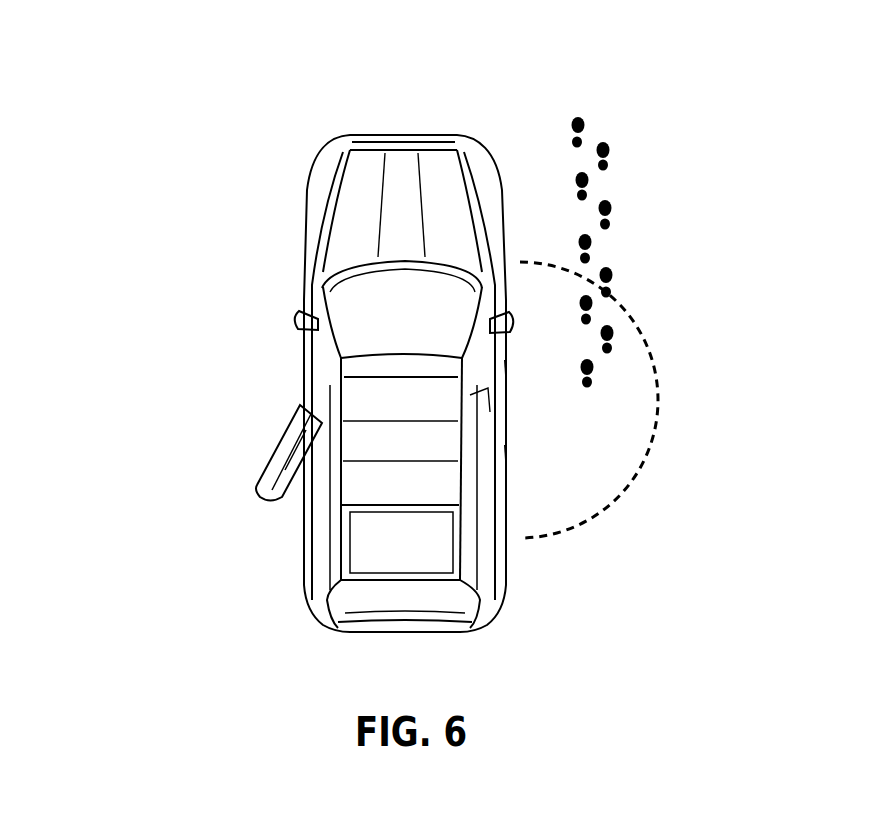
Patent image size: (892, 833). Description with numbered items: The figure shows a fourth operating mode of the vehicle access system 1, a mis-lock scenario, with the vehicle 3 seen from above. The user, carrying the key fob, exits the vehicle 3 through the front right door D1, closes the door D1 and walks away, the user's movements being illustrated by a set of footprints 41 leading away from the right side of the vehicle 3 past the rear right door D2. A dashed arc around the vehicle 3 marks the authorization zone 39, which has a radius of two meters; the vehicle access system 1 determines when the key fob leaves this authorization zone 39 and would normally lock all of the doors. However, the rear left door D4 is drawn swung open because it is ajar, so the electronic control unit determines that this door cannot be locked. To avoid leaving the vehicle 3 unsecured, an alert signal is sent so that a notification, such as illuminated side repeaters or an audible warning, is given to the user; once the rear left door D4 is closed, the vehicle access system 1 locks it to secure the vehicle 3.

The vehicle access system 1 is at (240, 69).
The vehicle 3 is at (323, 217).
The authorization zone 39 is at (593, 160).
The set of footprints 41 is at (580, 517).
The front right door D1 is at (500, 367).
The rear right door D2 is at (500, 453).
The rear left door D4 is at (293, 452).